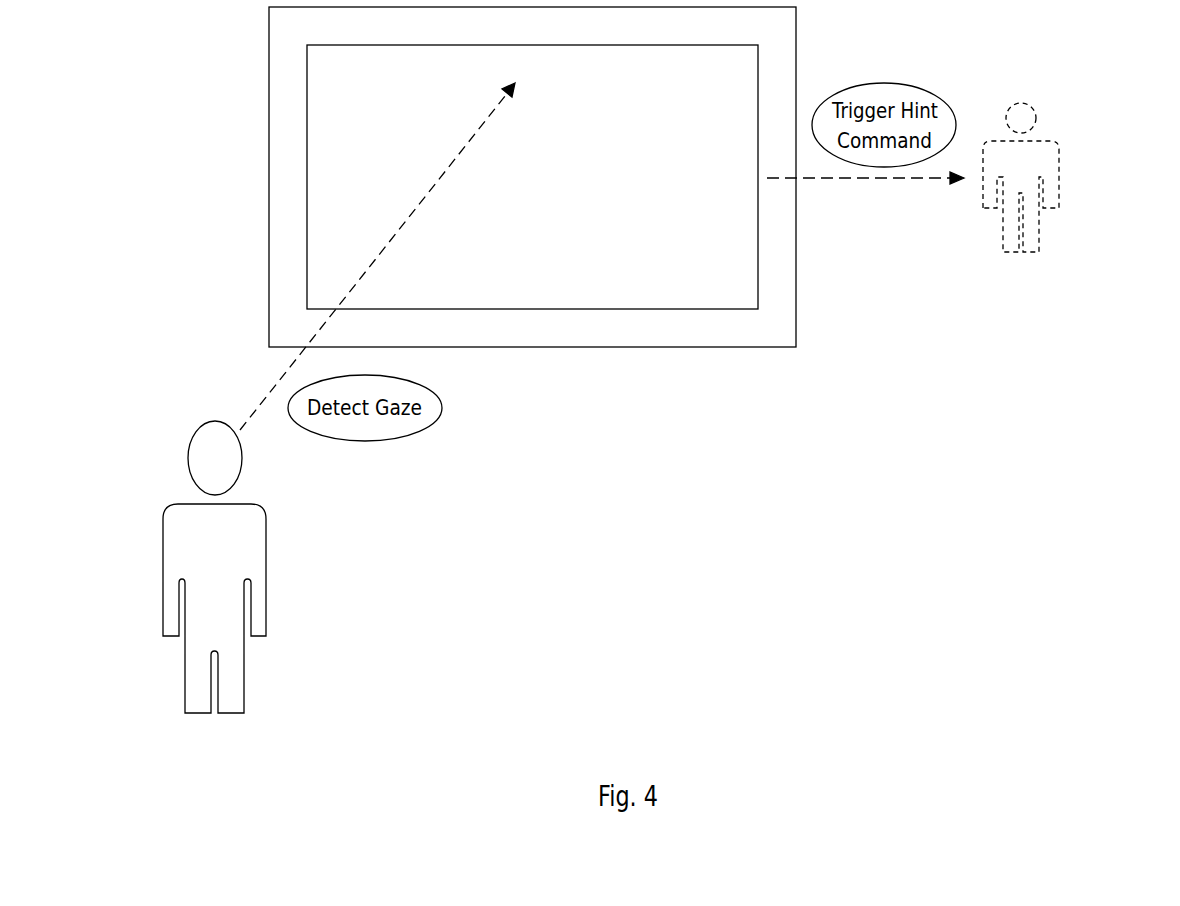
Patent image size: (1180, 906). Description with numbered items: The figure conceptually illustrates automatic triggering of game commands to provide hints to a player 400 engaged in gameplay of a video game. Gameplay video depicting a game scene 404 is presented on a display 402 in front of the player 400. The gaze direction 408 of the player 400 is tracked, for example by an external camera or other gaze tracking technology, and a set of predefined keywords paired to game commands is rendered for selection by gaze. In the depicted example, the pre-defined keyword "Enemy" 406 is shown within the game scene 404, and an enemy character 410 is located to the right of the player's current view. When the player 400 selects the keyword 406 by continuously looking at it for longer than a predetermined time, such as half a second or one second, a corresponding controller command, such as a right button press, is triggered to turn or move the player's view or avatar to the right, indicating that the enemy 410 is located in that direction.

The player 400 is at (263, 514).
The display 402 is at (268, 122).
The game scene 404 is at (558, 236).
The pre-defined keyword "Enemy" 406 is at (570, 73).
The gaze direction 408 is at (271, 395).
The enemy character 410 is at (1050, 142).